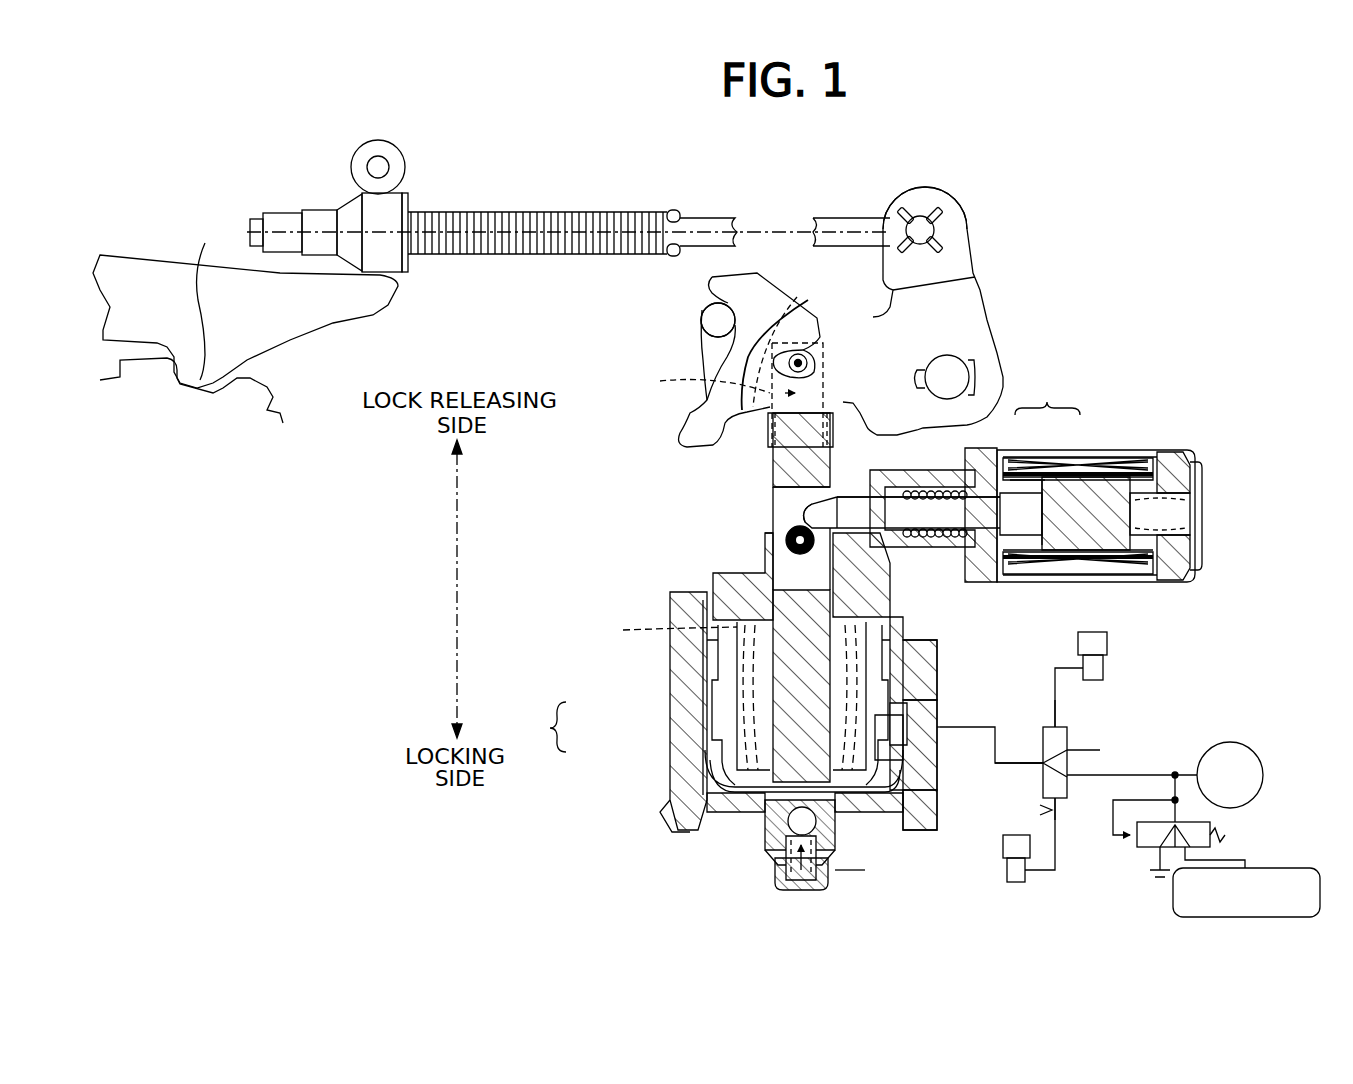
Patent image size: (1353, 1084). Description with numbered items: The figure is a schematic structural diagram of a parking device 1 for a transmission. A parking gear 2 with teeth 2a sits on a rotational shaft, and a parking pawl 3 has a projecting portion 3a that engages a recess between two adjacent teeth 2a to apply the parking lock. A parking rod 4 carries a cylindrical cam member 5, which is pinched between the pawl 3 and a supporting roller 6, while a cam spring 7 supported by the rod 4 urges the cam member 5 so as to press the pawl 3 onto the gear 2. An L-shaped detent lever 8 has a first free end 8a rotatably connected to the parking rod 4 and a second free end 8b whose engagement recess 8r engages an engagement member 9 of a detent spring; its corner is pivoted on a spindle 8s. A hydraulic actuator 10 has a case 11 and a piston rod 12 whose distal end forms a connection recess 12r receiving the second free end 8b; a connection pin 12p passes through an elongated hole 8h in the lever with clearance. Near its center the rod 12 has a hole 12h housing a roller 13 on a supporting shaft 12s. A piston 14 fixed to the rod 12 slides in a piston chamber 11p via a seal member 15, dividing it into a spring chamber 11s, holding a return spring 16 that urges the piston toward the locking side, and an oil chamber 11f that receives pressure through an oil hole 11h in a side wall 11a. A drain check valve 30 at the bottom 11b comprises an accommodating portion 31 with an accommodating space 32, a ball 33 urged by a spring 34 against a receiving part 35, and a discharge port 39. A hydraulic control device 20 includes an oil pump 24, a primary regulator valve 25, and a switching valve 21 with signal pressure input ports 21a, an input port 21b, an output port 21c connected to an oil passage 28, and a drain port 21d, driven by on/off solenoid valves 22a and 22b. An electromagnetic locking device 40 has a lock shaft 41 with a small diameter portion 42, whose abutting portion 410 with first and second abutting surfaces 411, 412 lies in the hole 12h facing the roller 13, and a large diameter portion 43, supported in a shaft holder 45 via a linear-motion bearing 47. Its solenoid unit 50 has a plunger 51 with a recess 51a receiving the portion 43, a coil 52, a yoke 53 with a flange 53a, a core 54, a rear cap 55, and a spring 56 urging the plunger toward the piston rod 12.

The parking device 1 is at (1100, 215).
The parking gear 2 is at (286, 418).
The teeth 2a is at (250, 395).
The parking pawl 3 is at (147, 278).
The projecting portion 3a is at (206, 296).
The parking rod 4 is at (845, 225).
The cam member 5 is at (411, 271).
The supporting roller 6 is at (406, 173).
The cam spring 7 is at (548, 215).
The detent lever 8 is at (946, 299).
The first free end 8a is at (960, 218).
The second free end 8b is at (713, 408).
The elongated hole 8h is at (800, 330).
The engagement recess 8r is at (720, 319).
The spindle 8s is at (955, 377).
The engagement member 9 is at (718, 322).
The hydraulic actuator 10 is at (912, 630).
The case 11 is at (760, 682).
The side wall 11a is at (930, 670).
The bottom 11b is at (680, 812).
The oil chamber 11f is at (715, 762).
The oil hole 11h is at (935, 710).
The piston chamber 11p is at (541, 727).
The spring chamber 11s is at (730, 702).
The piston rod 12 is at (721, 597).
The hole 12h is at (790, 490).
The connection pin 12p is at (796, 363).
The connection recess 12r is at (693, 382).
The supporting shaft 12s is at (700, 560).
The roller 13 is at (790, 542).
The piston 14 is at (928, 795).
The seal member 15 is at (918, 742).
The return spring 16 is at (707, 650).
The hydraulic control device 20 is at (1124, 773).
The switching valve 21 is at (1036, 769).
The signal pressure input ports 21a is at (1057, 720).
The input port 21b is at (1068, 793).
The output port 21c is at (1043, 775).
The drain port 21d is at (1068, 748).
The on/off solenoid valve 22a is at (1110, 643).
The on/off solenoid valve 22b is at (1002, 852).
The oil pump 24 is at (1232, 742).
The primary regulator valve 25 is at (1140, 848).
The oil passage 28 is at (1030, 763).
The drain check valve 30 is at (777, 863).
The accommodating portion 31 is at (770, 818).
The accommodating space 32 is at (778, 838).
The ball 33 is at (826, 838).
The spring 34 is at (790, 860).
The receiving part 35 is at (816, 823).
The discharge port 39 is at (805, 880).
The electromagnetic locking device 40 is at (1038, 494).
The lock shaft 41 is at (1047, 397).
The small diameter portion 42 is at (1012, 470).
The large diameter portion 43 is at (1055, 478).
The shaft holder 45 is at (890, 478).
The linear-motion bearing 47 is at (940, 480).
The solenoid unit 50 is at (1086, 494).
The plunger 51 is at (1050, 535).
The recess 51a is at (1033, 510).
The coil 52 is at (1105, 468).
The yoke 53 is at (1097, 580).
The flange 53a is at (993, 565).
The core 54 is at (1155, 455).
The rear cap 55 is at (1192, 575).
The spring 56 is at (1150, 580).
The abutting portion 410 is at (815, 507).
The first abutting surface 411 is at (768, 538).
The second abutting surface 412 is at (797, 512).